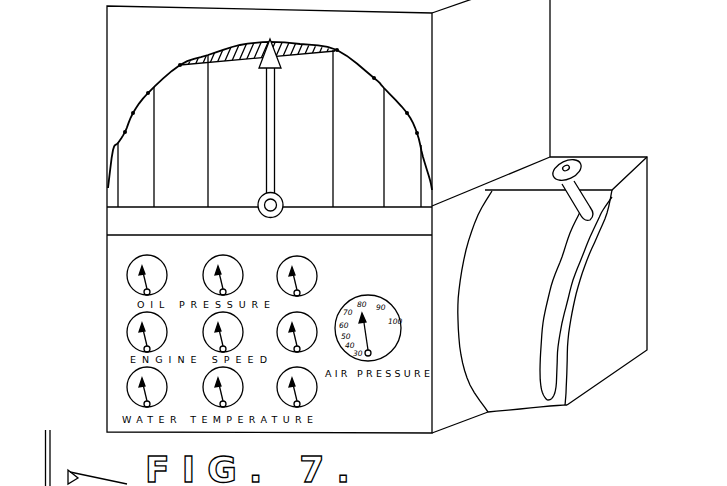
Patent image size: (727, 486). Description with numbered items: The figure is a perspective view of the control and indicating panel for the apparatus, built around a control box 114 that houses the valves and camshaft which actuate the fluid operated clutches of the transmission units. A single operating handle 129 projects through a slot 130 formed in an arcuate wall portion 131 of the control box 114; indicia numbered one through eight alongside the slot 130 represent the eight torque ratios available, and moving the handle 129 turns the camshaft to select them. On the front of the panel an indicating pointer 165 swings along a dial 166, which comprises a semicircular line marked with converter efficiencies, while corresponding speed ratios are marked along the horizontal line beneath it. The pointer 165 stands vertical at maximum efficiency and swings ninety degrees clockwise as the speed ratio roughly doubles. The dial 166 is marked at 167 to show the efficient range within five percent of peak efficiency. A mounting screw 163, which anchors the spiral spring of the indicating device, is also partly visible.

The control box 114 is at (532, 100).
The operating handle 129 is at (575, 193).
The slot 130 is at (573, 246).
The arcuate wall portion 131 is at (607, 156).
The mounting screw 163 is at (110, 484).
The indicating pointer 165 is at (270, 118).
The dial 166 is at (100, 140).
The efficient range marking 167 is at (213, 47).